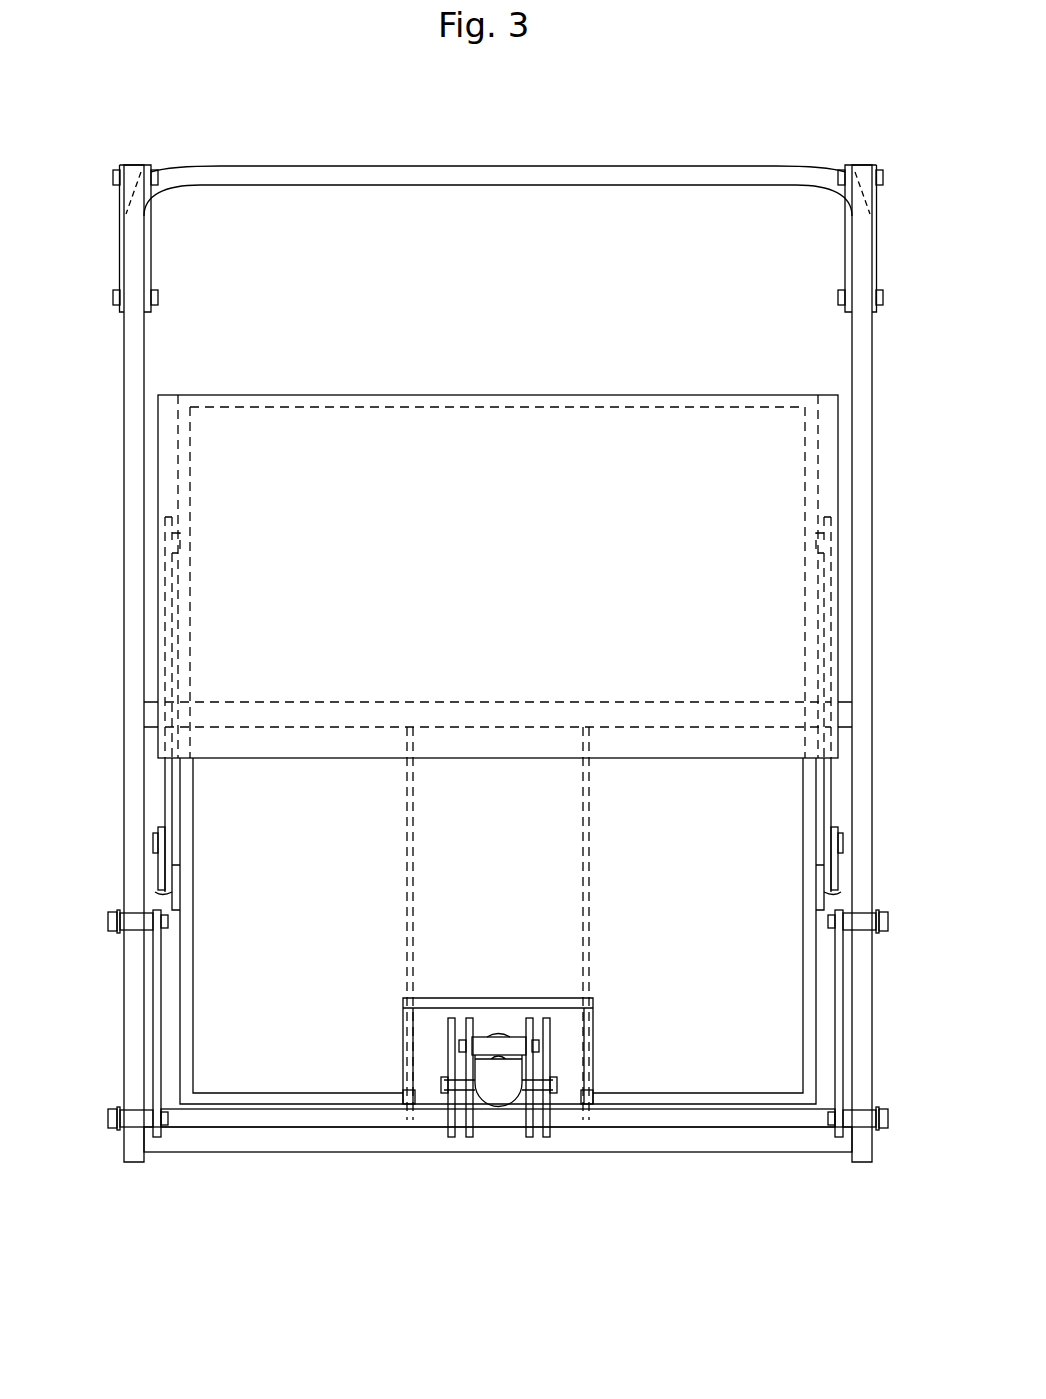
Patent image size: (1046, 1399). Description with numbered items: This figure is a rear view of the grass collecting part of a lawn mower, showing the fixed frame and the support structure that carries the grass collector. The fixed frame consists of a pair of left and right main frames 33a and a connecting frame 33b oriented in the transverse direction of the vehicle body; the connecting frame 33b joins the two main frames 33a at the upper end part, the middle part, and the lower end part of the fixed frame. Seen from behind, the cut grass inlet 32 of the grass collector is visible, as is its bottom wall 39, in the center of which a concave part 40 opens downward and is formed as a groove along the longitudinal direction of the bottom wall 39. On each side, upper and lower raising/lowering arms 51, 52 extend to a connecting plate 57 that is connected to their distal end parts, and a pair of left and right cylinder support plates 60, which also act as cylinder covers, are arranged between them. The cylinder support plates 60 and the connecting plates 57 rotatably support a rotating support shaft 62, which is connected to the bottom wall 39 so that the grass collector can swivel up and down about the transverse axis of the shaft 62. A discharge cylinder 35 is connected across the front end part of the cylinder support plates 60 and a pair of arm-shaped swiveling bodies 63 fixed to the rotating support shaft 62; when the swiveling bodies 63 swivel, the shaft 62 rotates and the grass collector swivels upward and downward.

The main frame 33a is at (140, 1142).
The connecting frame 33b is at (451, 170).
The upper raising/lowering arm 51 is at (135, 428).
The cut grass inlet 32 is at (505, 750).
The bottom wall 39 is at (700, 1100).
The connecting plate 57 is at (153, 1058).
The lower raising/lowering arm 52 is at (137, 994).
The rotating support shaft 62 is at (255, 1118).
The concave part 40 is at (430, 1020).
The cylinder support plate 60 is at (448, 1057).
The swiveling body 63 is at (520, 1030).
The discharge cylinder 35 is at (500, 1110).